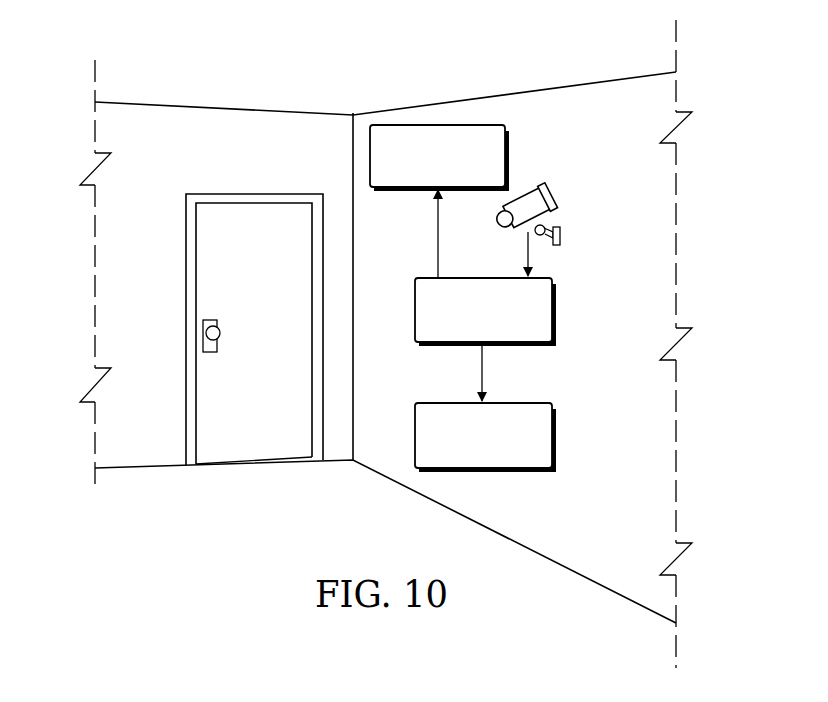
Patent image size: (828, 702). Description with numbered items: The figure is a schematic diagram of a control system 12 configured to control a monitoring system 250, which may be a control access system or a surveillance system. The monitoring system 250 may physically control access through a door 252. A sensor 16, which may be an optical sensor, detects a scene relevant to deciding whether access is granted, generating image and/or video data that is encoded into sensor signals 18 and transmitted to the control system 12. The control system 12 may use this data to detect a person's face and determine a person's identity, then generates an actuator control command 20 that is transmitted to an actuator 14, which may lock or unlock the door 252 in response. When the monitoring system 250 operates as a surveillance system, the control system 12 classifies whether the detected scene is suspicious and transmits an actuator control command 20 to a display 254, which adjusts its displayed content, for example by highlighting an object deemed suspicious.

The control system 12 is at (552, 310).
The actuator 14 is at (505, 158).
The sensor 16 is at (560, 203).
The sensor signals 18 is at (526, 248).
The actuator control command 20 is at (436, 234).
The monitoring system 250 is at (547, 51).
The door 252 is at (254, 329).
The display 254 is at (552, 438).